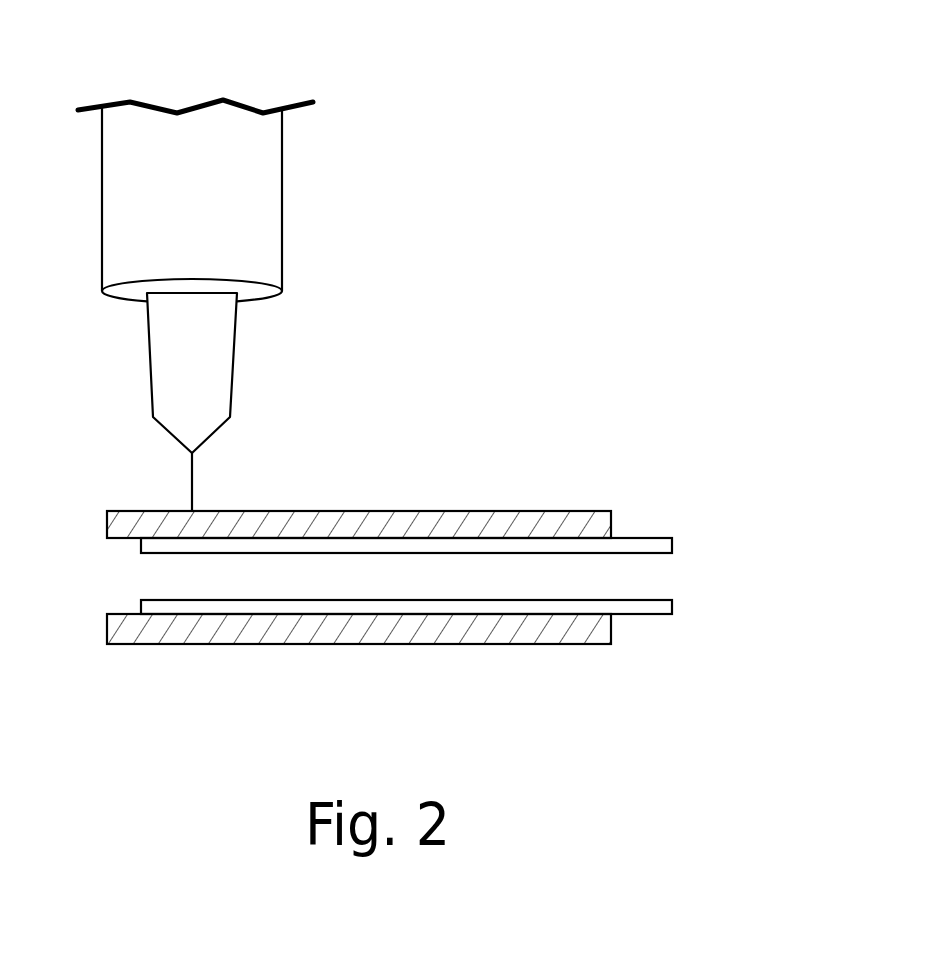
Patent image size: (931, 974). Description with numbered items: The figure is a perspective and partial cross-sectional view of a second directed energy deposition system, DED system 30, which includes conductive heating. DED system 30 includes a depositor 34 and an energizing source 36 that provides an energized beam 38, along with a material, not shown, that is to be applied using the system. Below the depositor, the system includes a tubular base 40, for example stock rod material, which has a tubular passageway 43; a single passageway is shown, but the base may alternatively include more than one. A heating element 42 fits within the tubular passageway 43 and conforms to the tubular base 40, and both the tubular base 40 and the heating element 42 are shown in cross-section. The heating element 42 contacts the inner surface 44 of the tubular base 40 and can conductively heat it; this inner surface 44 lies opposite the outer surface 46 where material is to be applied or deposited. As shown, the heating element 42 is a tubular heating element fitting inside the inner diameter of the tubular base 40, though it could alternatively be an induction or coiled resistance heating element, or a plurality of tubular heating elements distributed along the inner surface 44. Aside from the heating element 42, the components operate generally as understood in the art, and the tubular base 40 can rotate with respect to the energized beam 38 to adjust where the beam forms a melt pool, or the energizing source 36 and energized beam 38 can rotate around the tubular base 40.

The DED system 30 is at (519, 82).
The depositor 34 is at (237, 355).
The energizing source 36 is at (283, 203).
The energized beam 38 is at (193, 477).
The tubular base 40 is at (527, 511).
The heating element 42 is at (647, 537).
The tubular passageway 43 is at (670, 580).
The inner surface 44 is at (118, 552).
The outer surface 46 is at (430, 496).